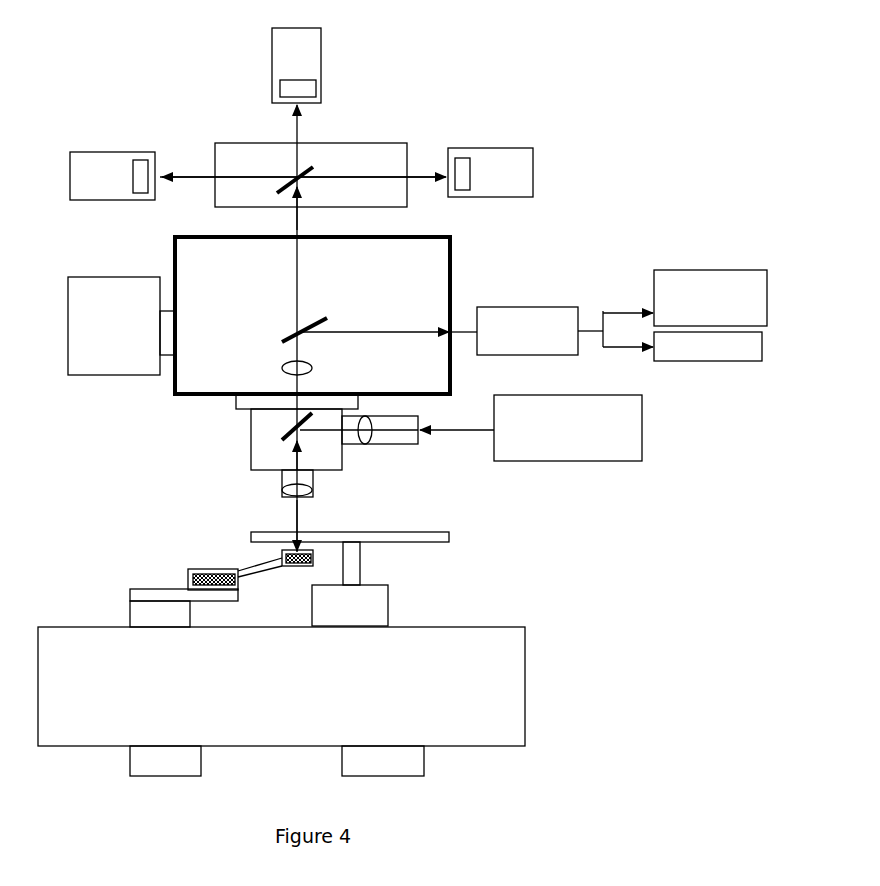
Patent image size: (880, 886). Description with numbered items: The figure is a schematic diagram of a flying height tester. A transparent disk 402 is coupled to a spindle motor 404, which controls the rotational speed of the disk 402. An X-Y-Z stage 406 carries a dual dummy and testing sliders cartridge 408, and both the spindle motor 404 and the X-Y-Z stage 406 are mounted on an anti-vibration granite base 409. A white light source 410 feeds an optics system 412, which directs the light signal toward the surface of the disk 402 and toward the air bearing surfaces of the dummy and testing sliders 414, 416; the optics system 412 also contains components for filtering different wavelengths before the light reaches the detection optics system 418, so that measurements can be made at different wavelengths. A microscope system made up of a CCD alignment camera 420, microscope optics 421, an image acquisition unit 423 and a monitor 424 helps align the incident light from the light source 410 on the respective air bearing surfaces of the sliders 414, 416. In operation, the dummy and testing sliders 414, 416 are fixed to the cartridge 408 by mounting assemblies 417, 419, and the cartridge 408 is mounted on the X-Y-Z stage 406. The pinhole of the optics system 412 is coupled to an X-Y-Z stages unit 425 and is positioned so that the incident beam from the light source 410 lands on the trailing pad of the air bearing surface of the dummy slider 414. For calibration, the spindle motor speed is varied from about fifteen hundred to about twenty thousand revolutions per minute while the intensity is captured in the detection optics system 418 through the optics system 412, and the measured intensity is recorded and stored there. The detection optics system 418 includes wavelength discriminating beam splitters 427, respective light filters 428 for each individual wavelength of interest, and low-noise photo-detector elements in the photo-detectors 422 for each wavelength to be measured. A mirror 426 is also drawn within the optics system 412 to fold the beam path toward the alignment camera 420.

The transparent disk 402 is at (380, 530).
The spindle motor 404 is at (388, 607).
The X-Y-Z stage 406 is at (128, 610).
The dual dummy and testing sliders cartridge 408 is at (130, 590).
The anti-vibration granite base 409 is at (527, 700).
The white light source 410 is at (518, 460).
The optics system 412 is at (207, 397).
The dummy slider 414 is at (280, 557).
The testing slider 416 is at (297, 568).
The mounting assembly 417 is at (199, 567).
The detection optics system 418 is at (167, 217).
The mounting assembly 419 is at (233, 591).
The CCD alignment camera 420 is at (498, 303).
The microscope optics 421 is at (251, 448).
The photo-detector 422 is at (325, 75).
The image acquisition unit 423 is at (675, 268).
The monitor 424 is at (680, 362).
The X-Y-Z stages unit 425 is at (68, 313).
The mirror 426 is at (311, 323).
The wavelength discriminating beam splitter 427 is at (293, 168).
The light filter 428 is at (318, 90).